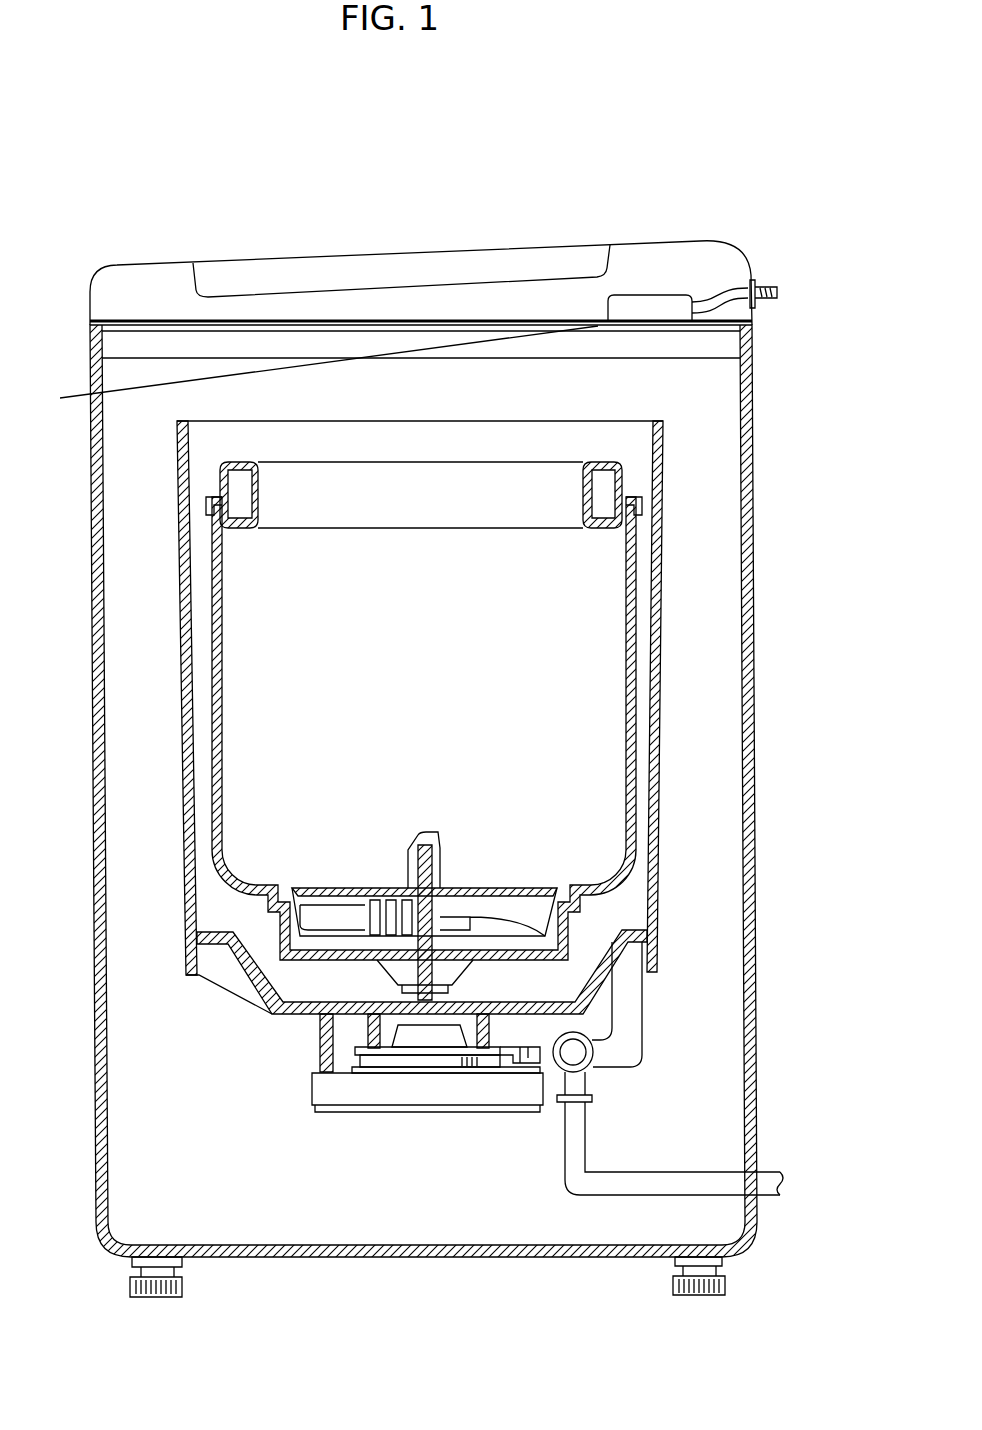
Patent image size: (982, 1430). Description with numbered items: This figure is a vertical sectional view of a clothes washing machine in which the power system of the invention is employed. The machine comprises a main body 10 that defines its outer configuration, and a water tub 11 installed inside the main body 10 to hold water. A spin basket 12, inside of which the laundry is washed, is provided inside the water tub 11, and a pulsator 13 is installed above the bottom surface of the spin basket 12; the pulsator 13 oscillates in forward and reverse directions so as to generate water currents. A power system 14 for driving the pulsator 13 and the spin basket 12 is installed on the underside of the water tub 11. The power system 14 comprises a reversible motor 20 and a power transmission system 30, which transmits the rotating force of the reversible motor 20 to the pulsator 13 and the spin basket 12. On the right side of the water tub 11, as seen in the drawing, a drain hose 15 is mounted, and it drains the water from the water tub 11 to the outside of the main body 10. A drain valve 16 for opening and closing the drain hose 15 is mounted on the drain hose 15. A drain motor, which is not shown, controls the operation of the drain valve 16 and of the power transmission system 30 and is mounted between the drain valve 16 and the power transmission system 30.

The main body 10 is at (752, 533).
The water tub 11 is at (665, 620).
The spin basket 12 is at (632, 740).
The pulsator 13 is at (548, 902).
The power system 14 is at (432, 1120).
The drain hose 15 is at (735, 1180).
The drain valve 16 is at (595, 1052).
The reversible motor 20 is at (362, 1105).
The power transmission system 30 is at (453, 1040).